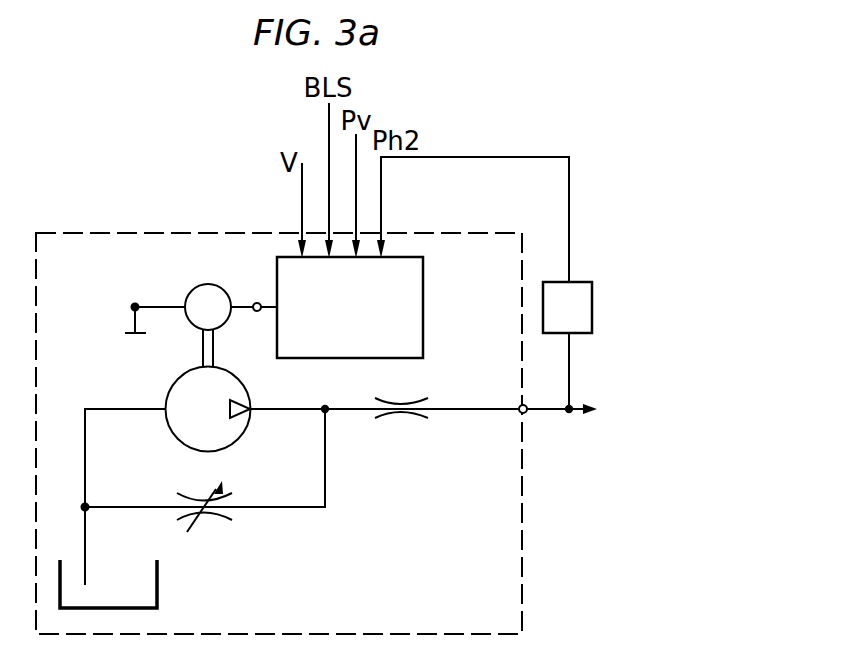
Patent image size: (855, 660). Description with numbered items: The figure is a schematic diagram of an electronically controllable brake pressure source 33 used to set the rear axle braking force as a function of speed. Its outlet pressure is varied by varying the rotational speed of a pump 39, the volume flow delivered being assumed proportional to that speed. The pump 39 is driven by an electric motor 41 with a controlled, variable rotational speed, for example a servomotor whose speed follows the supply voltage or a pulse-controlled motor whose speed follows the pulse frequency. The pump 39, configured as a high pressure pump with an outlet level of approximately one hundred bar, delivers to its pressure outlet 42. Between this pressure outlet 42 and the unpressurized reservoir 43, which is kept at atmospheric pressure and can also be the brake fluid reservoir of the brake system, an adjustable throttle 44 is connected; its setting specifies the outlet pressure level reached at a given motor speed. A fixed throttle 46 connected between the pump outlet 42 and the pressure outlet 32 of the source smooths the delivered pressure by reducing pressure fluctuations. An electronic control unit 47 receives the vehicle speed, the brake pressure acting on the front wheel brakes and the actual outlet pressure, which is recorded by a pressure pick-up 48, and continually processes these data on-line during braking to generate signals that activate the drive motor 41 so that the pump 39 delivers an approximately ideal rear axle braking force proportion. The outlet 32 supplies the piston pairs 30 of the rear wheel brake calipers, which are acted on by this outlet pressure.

The piston pairs 30 is at (648, 409).
The pressure outlet 32 is at (517, 406).
The brake pressure source 33 is at (102, 232).
The pump 39 is at (238, 373).
The electric motor 41 is at (226, 292).
The pressure outlet of the pump 42 is at (324, 403).
The unpressurized reservoir 43 is at (157, 595).
The throttle 44 is at (205, 513).
The fixed throttle 46 is at (387, 399).
The electronic control unit 47 is at (423, 298).
The pressure pick-up 48 is at (592, 300).